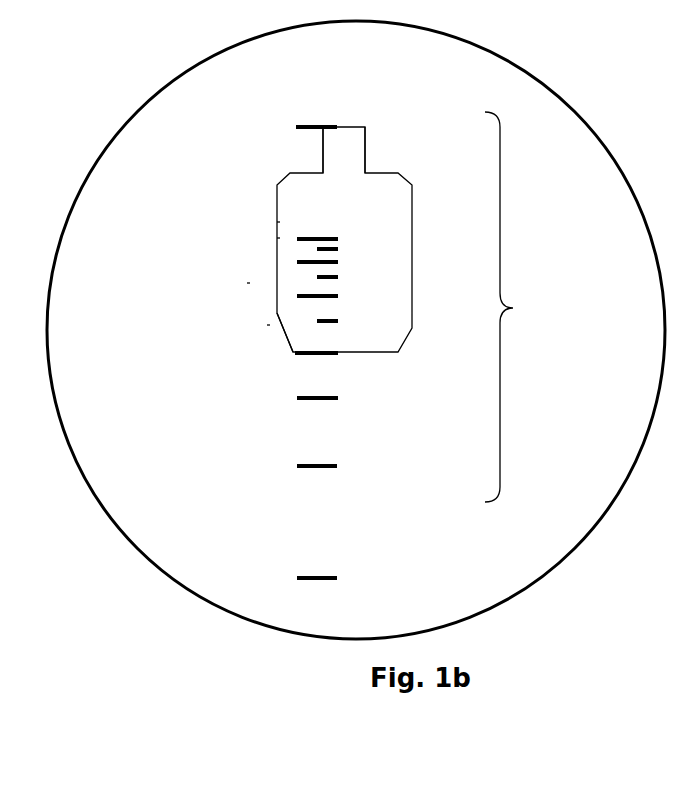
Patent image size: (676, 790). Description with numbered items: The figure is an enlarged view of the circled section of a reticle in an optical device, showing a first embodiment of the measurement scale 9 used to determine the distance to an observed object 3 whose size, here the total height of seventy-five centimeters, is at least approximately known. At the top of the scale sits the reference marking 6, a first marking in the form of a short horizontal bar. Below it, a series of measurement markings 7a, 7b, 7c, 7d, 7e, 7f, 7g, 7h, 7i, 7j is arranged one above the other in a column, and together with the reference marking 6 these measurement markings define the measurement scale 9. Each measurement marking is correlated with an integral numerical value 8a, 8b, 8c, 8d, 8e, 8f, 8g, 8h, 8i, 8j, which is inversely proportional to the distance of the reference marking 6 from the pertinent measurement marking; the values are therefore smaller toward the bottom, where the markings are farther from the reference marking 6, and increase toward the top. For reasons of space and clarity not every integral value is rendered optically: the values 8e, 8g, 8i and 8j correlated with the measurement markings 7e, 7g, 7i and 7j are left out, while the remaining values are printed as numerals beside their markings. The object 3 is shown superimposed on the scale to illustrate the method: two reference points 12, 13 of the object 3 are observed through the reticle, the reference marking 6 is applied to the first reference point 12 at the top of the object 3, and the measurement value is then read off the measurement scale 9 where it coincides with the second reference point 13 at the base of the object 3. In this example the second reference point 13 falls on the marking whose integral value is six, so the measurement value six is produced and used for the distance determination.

The object 3 is at (335, 191).
The reference marking 6 is at (310, 127).
The first reference point 12 is at (325, 128).
The second reference point 13 is at (295, 353).
The measurement scale 9 is at (511, 307).
The measurement marking 7a is at (337, 578).
The measurement marking 7b is at (337, 466).
The measurement marking 7c is at (338, 398).
The measurement marking 7d is at (338, 353).
The measurement marking 7e is at (338, 321).
The measurement marking 7f is at (338, 296).
The measurement marking 7g is at (338, 277).
The measurement marking 7h is at (338, 262).
The measurement marking 7i is at (338, 249).
The measurement marking 7j is at (338, 239).
The integral numerical value 8a is at (242, 568).
The integral numerical value 8b is at (247, 467).
The integral numerical value 8c is at (248, 398).
The integral numerical value 8d is at (248, 350).
The integral numerical value 8e is at (267, 325).
The integral numerical value 8f is at (250, 293).
The integral numerical value 8g is at (247, 283).
The integral numerical value 8h is at (238, 265).
The integral numerical value 8i is at (267, 238).
The integral numerical value 8j is at (265, 222).